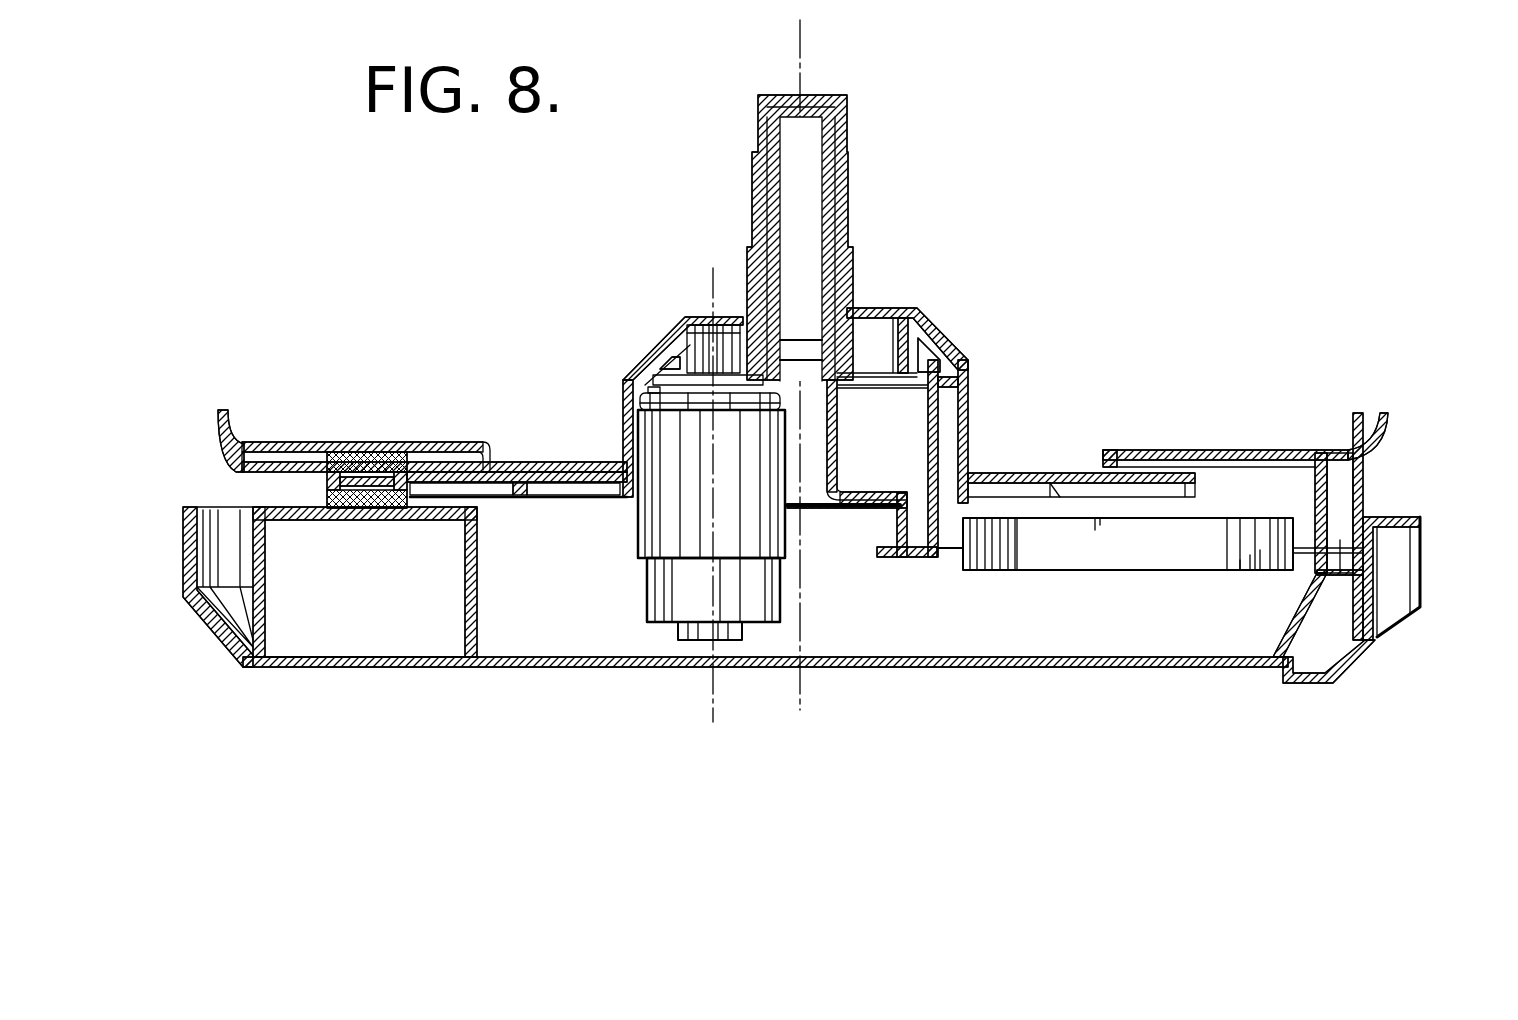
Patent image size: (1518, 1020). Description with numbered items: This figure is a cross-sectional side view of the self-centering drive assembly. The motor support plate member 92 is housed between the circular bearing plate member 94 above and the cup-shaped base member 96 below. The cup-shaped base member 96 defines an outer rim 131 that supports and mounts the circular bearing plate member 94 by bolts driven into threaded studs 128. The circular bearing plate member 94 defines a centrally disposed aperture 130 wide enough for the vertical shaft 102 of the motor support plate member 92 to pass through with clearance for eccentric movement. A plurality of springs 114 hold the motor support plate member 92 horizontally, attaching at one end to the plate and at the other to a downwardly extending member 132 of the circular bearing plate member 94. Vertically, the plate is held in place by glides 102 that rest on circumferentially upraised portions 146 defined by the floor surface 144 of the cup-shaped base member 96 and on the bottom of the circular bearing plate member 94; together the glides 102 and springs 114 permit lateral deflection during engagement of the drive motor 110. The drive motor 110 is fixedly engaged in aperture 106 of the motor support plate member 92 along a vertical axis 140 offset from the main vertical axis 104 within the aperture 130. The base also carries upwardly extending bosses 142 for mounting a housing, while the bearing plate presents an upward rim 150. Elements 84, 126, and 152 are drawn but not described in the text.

The stem 84 is at (848, 244).
The motor support plate member 92 is at (970, 400).
The circular bearing plate member 94 is at (1240, 447).
The cup-shaped base member 96 is at (1053, 669).
The glides 102 is at (842, 298).
The main vertical axis 104 is at (848, 169).
The aperture 106 is at (628, 398).
The drive motor 110 is at (637, 542).
The springs 114 is at (1050, 571).
The cover 126 is at (670, 330).
The threaded studs 128 is at (1343, 513).
The centrally disposed aperture 130 is at (1037, 470).
The outer rim 131 is at (1310, 572).
The downwardly extending member 132 is at (1363, 477).
The vertical axis 140 is at (710, 302).
The upwardly extending annular rim or bosses 142 is at (1403, 533).
The floor surface 144 is at (940, 648).
The circumferentially upraised portions 146 is at (478, 613).
The upward rim 150 is at (1367, 415).
The gear 152 is at (647, 365).